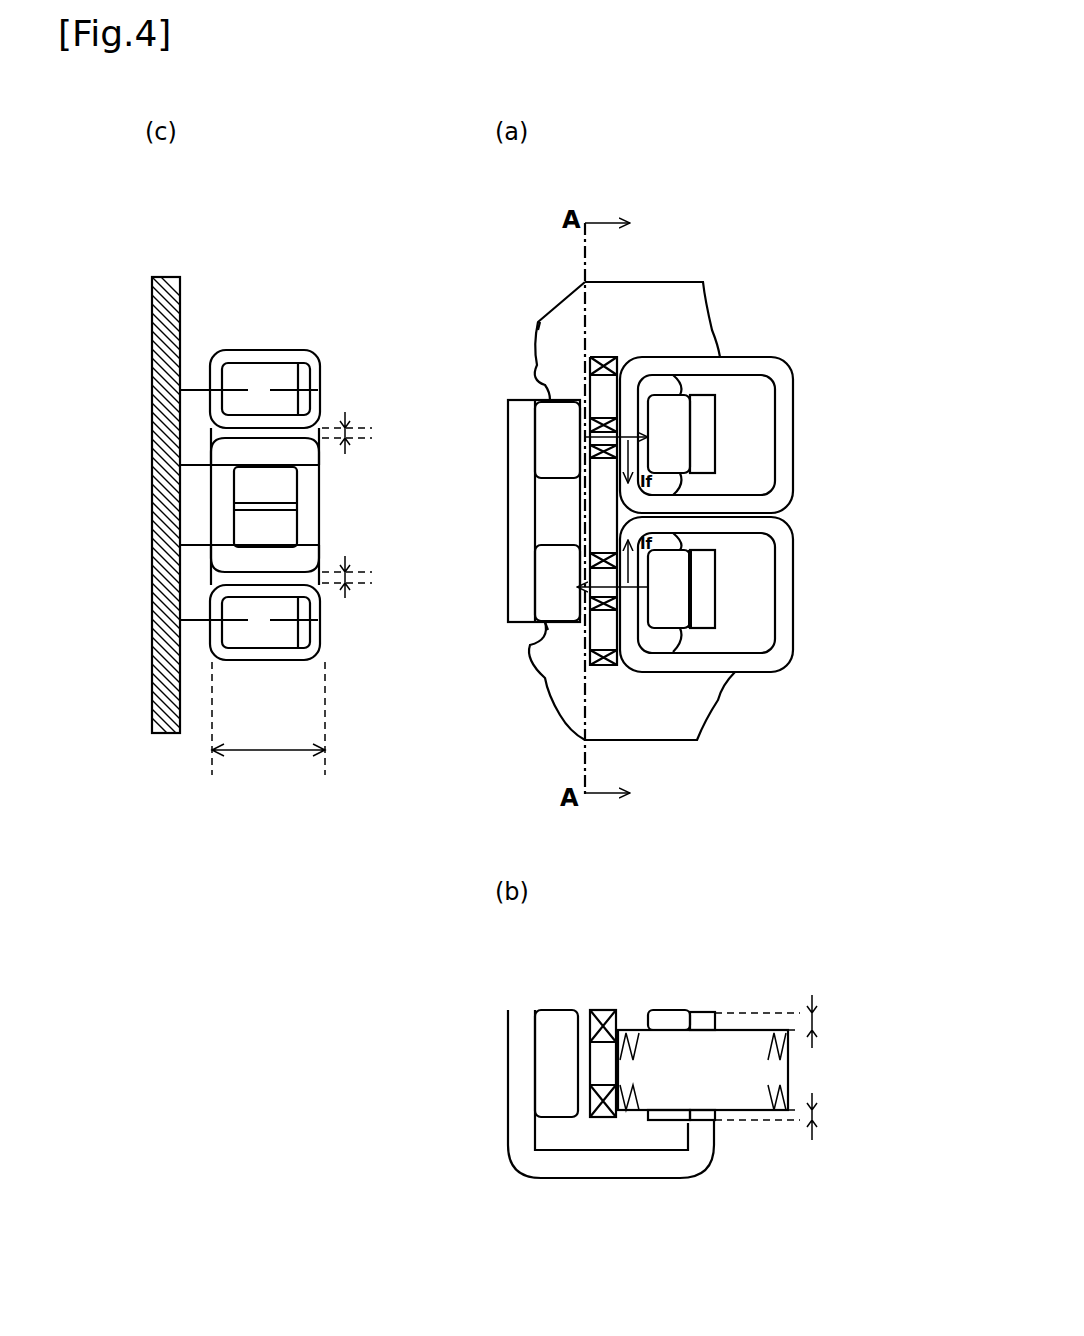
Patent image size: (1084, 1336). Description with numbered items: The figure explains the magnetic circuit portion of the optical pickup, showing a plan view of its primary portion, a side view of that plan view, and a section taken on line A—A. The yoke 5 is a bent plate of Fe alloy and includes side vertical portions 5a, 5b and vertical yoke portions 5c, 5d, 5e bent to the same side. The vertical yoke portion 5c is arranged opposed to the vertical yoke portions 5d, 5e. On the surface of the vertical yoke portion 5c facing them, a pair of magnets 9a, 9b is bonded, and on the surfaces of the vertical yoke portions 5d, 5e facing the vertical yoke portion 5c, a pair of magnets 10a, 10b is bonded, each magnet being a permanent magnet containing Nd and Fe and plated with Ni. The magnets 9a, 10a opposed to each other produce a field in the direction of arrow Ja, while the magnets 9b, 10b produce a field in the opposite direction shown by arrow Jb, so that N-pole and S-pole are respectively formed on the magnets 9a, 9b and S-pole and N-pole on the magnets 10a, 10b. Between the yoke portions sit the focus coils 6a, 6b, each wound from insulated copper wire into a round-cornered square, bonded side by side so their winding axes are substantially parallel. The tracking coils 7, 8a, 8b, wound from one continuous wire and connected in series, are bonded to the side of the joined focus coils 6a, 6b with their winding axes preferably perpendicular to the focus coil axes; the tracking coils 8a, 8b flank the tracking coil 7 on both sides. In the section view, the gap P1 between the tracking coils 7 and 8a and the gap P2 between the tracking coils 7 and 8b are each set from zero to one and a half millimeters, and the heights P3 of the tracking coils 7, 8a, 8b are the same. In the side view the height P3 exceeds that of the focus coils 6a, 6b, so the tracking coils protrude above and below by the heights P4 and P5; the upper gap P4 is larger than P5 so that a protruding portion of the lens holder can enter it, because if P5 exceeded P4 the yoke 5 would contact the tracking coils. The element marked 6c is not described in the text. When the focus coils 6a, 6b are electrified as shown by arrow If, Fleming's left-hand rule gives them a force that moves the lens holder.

The yoke 5 is at (177, 278).
The side vertical portion 5a is at (565, 278).
The side vertical portion 5b is at (583, 618).
The vertical yoke portion 5c is at (508, 600).
The vertical yoke portion 5d is at (678, 412).
The vertical yoke portion 5e is at (707, 593).
The focus coil 6a is at (787, 452).
The focus coil 6b is at (782, 580).
The core 6c is at (247, 488).
The tracking coil 7 is at (318, 505).
The tracking coil 8a is at (303, 350).
The tracking coil 8b is at (322, 647).
The magnet 9a is at (547, 450).
The magnet 9b is at (549, 563).
The magnet 10a is at (680, 560).
The magnet 10b is at (705, 413).
The gap P1 is at (367, 433).
The gap P2 is at (367, 577).
The height P3 is at (268, 718).
The gap P4 is at (797, 1021).
The gap P5 is at (797, 1120).